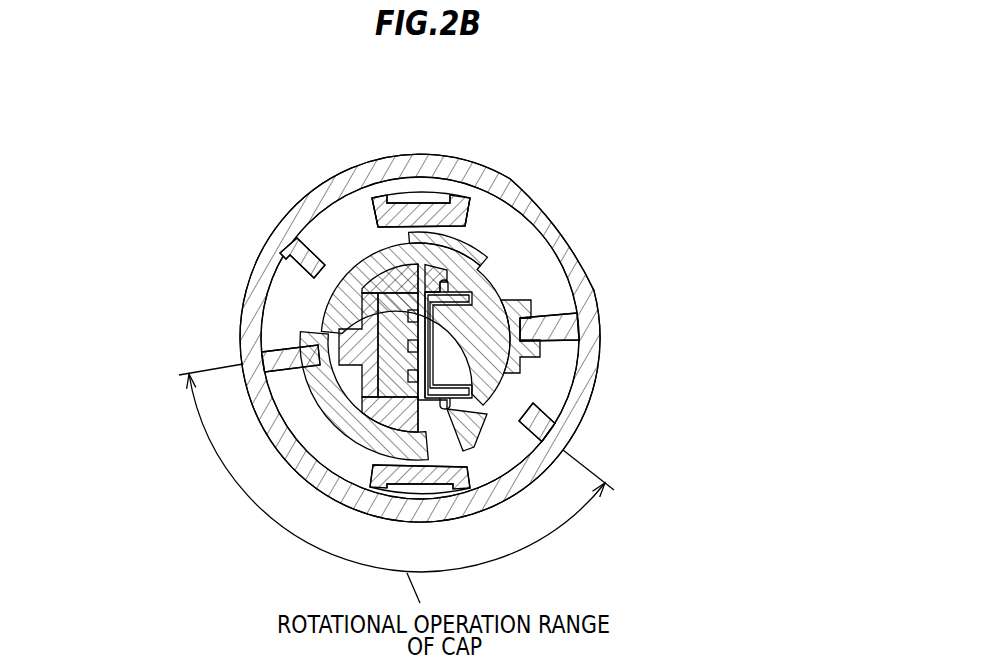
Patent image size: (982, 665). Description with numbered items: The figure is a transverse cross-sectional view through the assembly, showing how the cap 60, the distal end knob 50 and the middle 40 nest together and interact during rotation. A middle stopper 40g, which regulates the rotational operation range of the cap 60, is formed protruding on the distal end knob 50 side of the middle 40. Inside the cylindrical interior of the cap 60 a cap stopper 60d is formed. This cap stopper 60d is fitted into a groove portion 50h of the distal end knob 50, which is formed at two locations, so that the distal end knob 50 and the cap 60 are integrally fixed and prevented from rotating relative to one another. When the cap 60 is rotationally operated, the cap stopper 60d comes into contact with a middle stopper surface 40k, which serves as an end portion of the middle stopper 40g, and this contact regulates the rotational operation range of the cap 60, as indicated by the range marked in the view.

The middle 40 is at (447, 193).
The middle stopper 40g is at (376, 198).
The middle stopper surface 40k is at (374, 212).
The distal end knob 50 is at (500, 283).
The groove portion 50h is at (528, 328).
The cap 60 is at (558, 232).
The cap stopper 60d is at (264, 352).